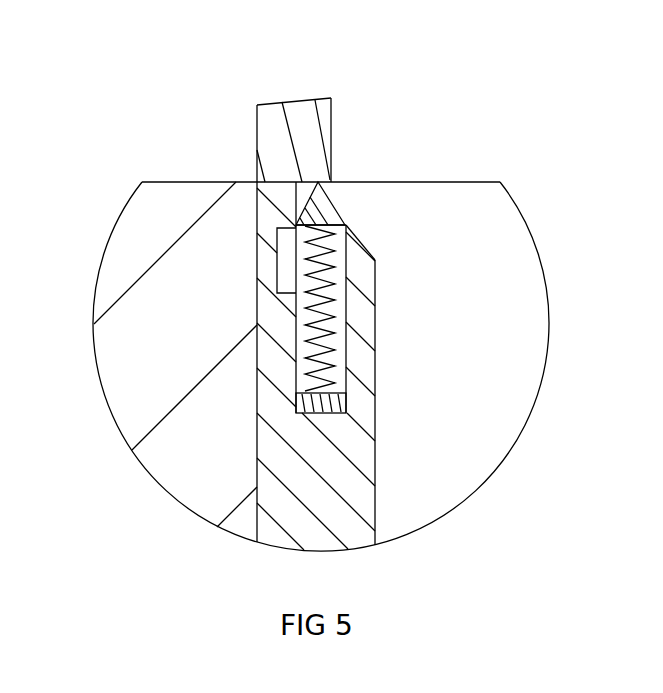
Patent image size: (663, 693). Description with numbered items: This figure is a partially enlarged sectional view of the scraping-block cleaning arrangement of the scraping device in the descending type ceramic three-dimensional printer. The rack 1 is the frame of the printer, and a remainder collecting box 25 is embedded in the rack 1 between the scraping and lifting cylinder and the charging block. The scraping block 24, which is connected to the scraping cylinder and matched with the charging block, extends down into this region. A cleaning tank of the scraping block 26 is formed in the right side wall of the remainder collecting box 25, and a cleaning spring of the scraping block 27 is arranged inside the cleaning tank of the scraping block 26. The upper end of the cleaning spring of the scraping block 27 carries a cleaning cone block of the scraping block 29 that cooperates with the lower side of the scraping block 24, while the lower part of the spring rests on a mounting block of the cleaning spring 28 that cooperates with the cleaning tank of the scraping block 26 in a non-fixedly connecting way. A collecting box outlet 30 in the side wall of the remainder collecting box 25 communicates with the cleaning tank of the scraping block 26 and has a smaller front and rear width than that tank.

The rack 1 is at (163, 310).
The scraping block 24 is at (278, 145).
The remainder collecting box 25 is at (347, 458).
The cleaning tank of the scraping block 26 is at (310, 325).
The cleaning spring of the scraping block 27 is at (312, 325).
The mounting block of the cleaning spring 28 is at (332, 393).
The cleaning cone block of the scraping block 29 is at (324, 211).
The collecting box outlet 30 is at (283, 258).